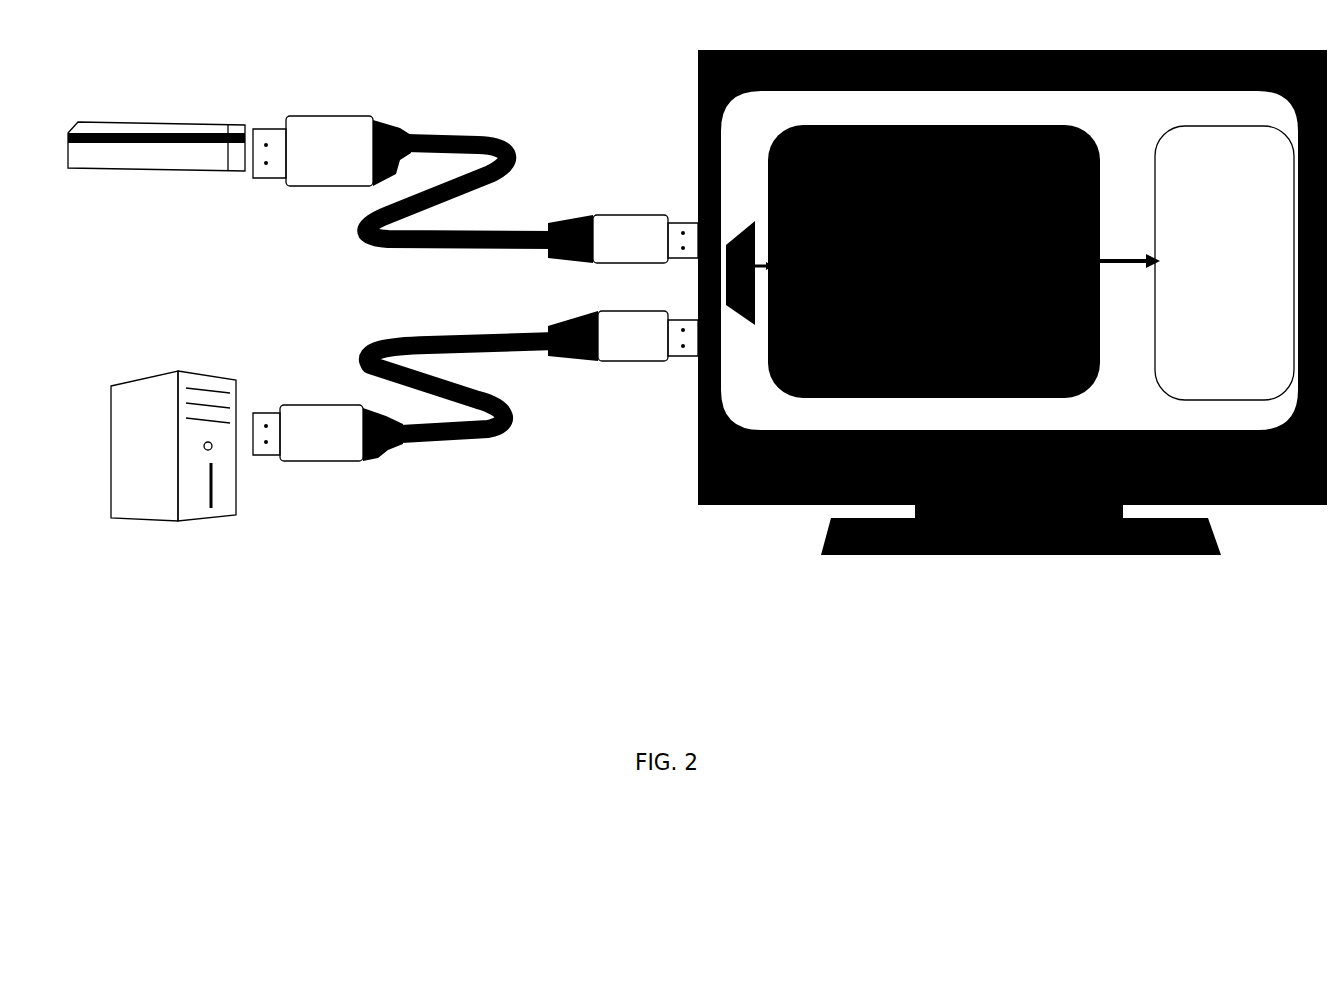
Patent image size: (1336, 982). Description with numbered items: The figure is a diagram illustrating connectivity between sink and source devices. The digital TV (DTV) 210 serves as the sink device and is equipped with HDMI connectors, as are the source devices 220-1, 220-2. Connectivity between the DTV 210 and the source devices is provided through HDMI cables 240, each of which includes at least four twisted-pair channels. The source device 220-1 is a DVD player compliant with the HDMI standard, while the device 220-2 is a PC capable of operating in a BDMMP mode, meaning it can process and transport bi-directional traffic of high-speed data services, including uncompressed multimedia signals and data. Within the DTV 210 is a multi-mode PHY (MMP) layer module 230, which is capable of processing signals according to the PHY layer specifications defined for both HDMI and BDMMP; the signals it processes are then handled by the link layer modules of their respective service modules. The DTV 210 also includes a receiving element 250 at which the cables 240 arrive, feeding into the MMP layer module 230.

The digital TV (DTV) 210 is at (833, 48).
The source device (DVD player) 220-1 is at (118, 116).
The source device (PC) 220-2 is at (160, 365).
The multi-mode PHY (MMP) layer module 230 is at (611, 312).
The HDMI cable 240 is at (335, 112).
The receiver / input port 250 is at (732, 220).